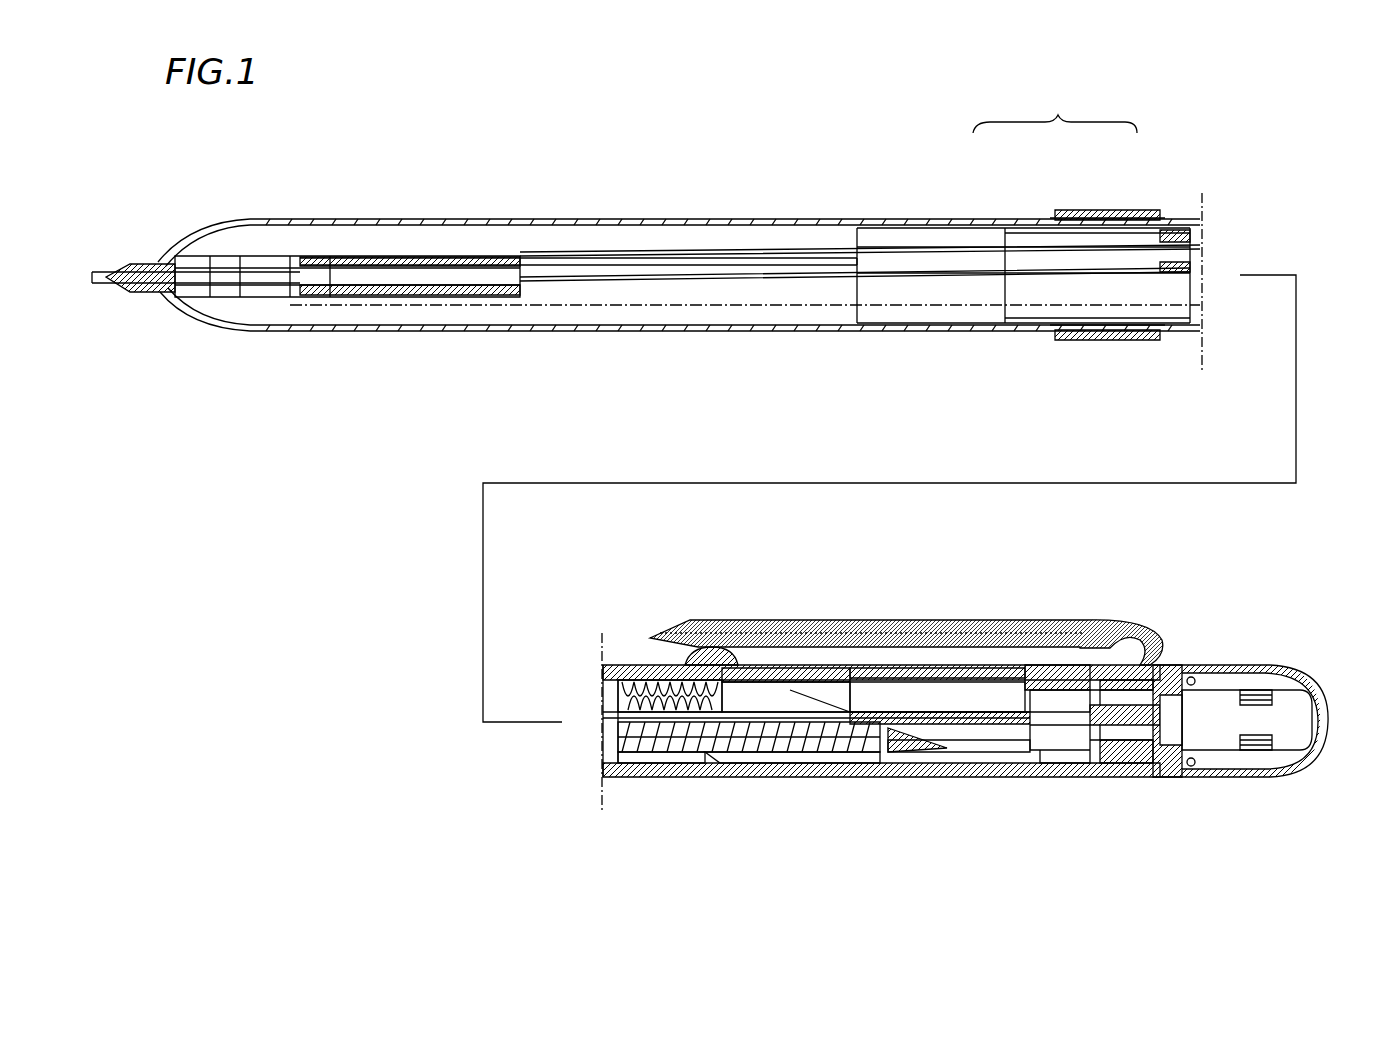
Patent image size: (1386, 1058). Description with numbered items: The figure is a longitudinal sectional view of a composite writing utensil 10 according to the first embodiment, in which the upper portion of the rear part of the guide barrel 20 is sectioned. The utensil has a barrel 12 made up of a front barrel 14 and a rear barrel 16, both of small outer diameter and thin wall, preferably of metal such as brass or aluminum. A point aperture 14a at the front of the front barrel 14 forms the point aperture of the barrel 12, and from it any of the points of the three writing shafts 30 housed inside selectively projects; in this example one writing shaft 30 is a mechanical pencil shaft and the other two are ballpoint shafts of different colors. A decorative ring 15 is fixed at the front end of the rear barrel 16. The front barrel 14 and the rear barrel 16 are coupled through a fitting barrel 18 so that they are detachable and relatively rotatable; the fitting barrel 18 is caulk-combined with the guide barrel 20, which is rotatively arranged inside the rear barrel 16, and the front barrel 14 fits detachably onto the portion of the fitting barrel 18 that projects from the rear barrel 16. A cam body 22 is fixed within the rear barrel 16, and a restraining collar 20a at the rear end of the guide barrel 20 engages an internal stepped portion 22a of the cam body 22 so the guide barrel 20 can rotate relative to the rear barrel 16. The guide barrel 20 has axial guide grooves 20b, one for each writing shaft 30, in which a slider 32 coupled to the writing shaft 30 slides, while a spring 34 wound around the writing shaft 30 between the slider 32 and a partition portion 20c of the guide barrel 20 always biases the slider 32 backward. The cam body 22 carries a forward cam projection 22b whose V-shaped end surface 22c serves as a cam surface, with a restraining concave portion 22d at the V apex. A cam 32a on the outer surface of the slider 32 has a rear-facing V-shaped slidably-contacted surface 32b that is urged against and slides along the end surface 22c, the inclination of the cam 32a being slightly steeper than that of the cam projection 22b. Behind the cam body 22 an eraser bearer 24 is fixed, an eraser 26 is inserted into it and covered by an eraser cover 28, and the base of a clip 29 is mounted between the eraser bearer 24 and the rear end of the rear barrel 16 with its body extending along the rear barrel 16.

The composite writing utensil 10 is at (977, 572).
The barrel 12 is at (1055, 112).
The front barrel 14 is at (960, 225).
The point aperture 14a is at (160, 290).
The decorative ring 15 is at (1105, 340).
The rear barrel 16 is at (1172, 217).
The fitting barrel 18 is at (1025, 228).
The guide barrel 20 is at (752, 777).
The restraining collar 20a is at (1108, 777).
The guide groove 20b is at (692, 777).
The partition portion 20c is at (628, 777).
The cam body 22 is at (1022, 777).
The internal stepped portion 22a is at (1075, 763).
The cam projection 22b is at (845, 668).
The end surface 22c is at (868, 777).
The restraining concave portion 22d is at (758, 682).
The eraser bearer 24 is at (1172, 777).
The eraser 26 is at (1288, 725).
The eraser cover 28 is at (1318, 700).
The clip 29 is at (1013, 620).
The writing shaft 30 is at (672, 275).
The slider 32 is at (622, 680).
The cam 32a is at (742, 682).
The slidably-contacted surface 32b is at (940, 752).
The spring 34 is at (640, 680).